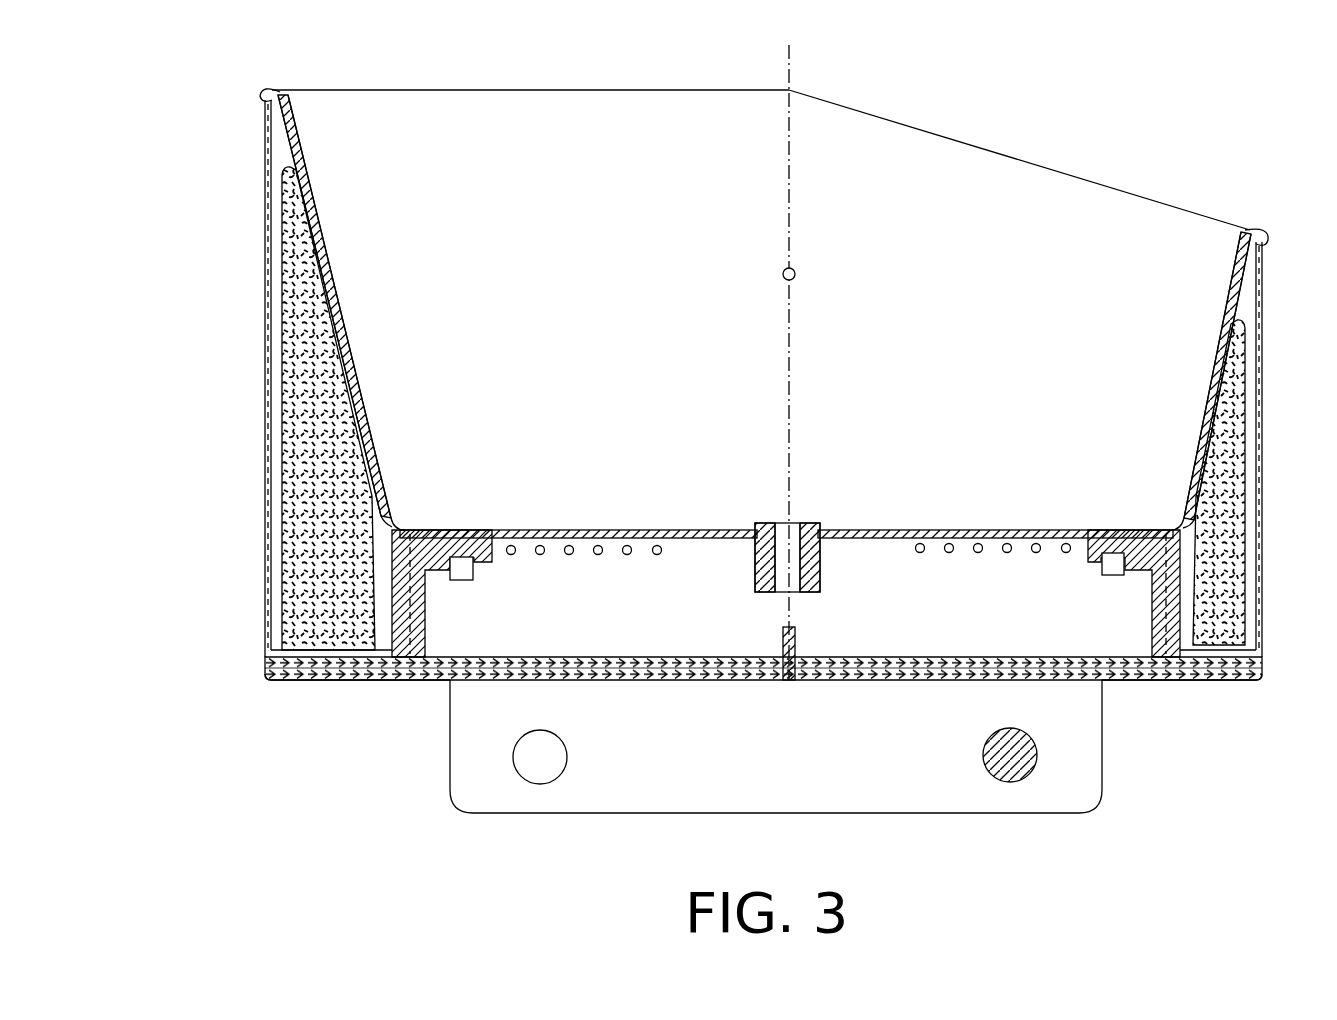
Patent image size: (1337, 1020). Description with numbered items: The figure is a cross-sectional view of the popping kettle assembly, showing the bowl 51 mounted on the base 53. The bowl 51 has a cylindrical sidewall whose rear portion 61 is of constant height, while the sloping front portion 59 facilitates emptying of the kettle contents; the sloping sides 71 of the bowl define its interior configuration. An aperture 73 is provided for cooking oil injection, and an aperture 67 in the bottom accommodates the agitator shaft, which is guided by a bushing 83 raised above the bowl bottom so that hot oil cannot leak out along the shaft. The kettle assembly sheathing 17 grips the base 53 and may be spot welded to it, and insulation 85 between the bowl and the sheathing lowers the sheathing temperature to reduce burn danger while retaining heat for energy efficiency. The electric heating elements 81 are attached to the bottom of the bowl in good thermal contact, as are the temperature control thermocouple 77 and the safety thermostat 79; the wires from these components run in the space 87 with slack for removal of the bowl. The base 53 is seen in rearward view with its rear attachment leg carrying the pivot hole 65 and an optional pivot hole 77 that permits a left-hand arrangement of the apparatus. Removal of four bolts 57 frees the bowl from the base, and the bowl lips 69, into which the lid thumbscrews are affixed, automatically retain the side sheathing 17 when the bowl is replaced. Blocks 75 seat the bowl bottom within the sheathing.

The kettle assembly sheathing 17 is at (263, 392).
The bowl 51 is at (566, 342).
The base 53 is at (884, 657).
The bolts 57 is at (412, 680).
The sloping front portion 59 is at (1088, 162).
The rear portion 61 is at (583, 88).
The pivot hole 65 is at (1000, 750).
The aperture 67 is at (804, 523).
The bowl lip 69 is at (280, 92).
The sloping sides 71 is at (340, 296).
The aperture 73 is at (782, 276).
The side block 75 is at (426, 646).
The optional pivot hole 77 is at (1108, 576).
The safety thermostat 79 is at (472, 580).
The electric heating elements 81 is at (976, 556).
The bushing 83 is at (764, 523).
The insulation 85 is at (300, 494).
The space 87 is at (654, 616).